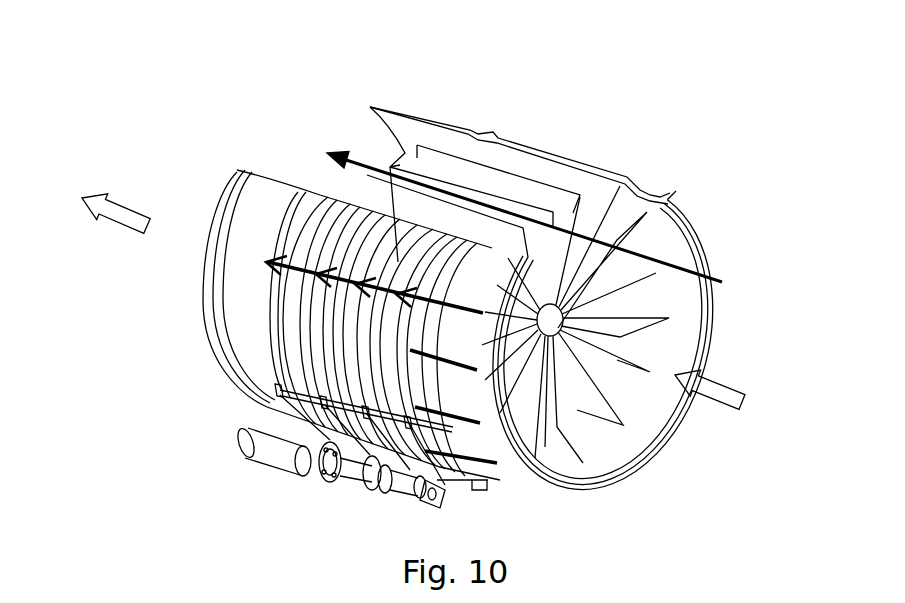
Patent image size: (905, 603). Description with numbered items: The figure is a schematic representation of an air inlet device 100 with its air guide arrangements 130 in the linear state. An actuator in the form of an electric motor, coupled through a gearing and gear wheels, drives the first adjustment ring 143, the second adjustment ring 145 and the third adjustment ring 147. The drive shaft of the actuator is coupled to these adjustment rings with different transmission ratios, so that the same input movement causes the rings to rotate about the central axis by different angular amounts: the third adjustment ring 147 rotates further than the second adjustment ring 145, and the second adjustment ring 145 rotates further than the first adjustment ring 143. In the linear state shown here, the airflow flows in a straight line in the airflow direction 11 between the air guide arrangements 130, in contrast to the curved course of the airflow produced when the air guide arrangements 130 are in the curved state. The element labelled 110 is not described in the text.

The air inlet device 100 is at (642, 107).
The fan case 110 is at (715, 322).
The air guide arrangements 130 is at (558, 427).
The first adjustment ring 143 is at (320, 195).
The second adjustment ring 145 is at (400, 150).
The third adjustment ring 147 is at (420, 262).
The airflow direction 11 is at (122, 222).